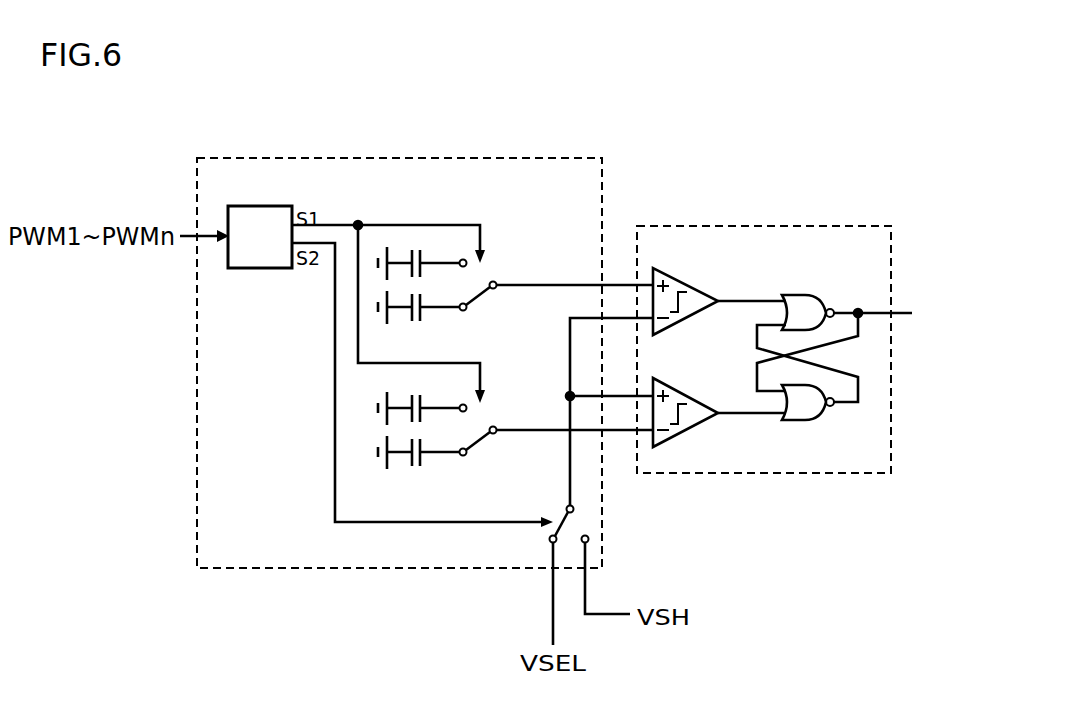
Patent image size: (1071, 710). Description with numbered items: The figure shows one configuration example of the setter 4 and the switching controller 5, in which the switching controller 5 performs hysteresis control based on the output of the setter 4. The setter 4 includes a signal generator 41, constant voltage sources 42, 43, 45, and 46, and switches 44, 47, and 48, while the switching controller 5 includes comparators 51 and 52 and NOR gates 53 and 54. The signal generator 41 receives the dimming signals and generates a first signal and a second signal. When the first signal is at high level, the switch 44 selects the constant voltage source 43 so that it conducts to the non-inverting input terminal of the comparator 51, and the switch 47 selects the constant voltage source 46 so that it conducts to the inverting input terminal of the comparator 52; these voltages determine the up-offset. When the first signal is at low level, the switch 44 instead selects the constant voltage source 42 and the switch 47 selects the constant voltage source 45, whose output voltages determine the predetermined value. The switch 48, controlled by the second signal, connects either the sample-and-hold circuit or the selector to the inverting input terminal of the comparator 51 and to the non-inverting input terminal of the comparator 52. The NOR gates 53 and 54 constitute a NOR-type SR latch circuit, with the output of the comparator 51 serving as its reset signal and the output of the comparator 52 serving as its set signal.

The setter 4 is at (400, 158).
The switching controller 5 is at (763, 225).
The signal generator 41 is at (261, 206).
The constant voltage source 42 is at (421, 240).
The constant voltage source 43 is at (421, 285).
The switch 44 is at (482, 319).
The constant voltage source 45 is at (421, 382).
The constant voltage source 46 is at (421, 427).
The switch 47 is at (482, 463).
The switch 48 is at (541, 536).
The comparator 51 is at (683, 280).
The comparator 52 is at (683, 391).
The NOR gate 53 is at (797, 295).
The NOR gate 54 is at (797, 422).